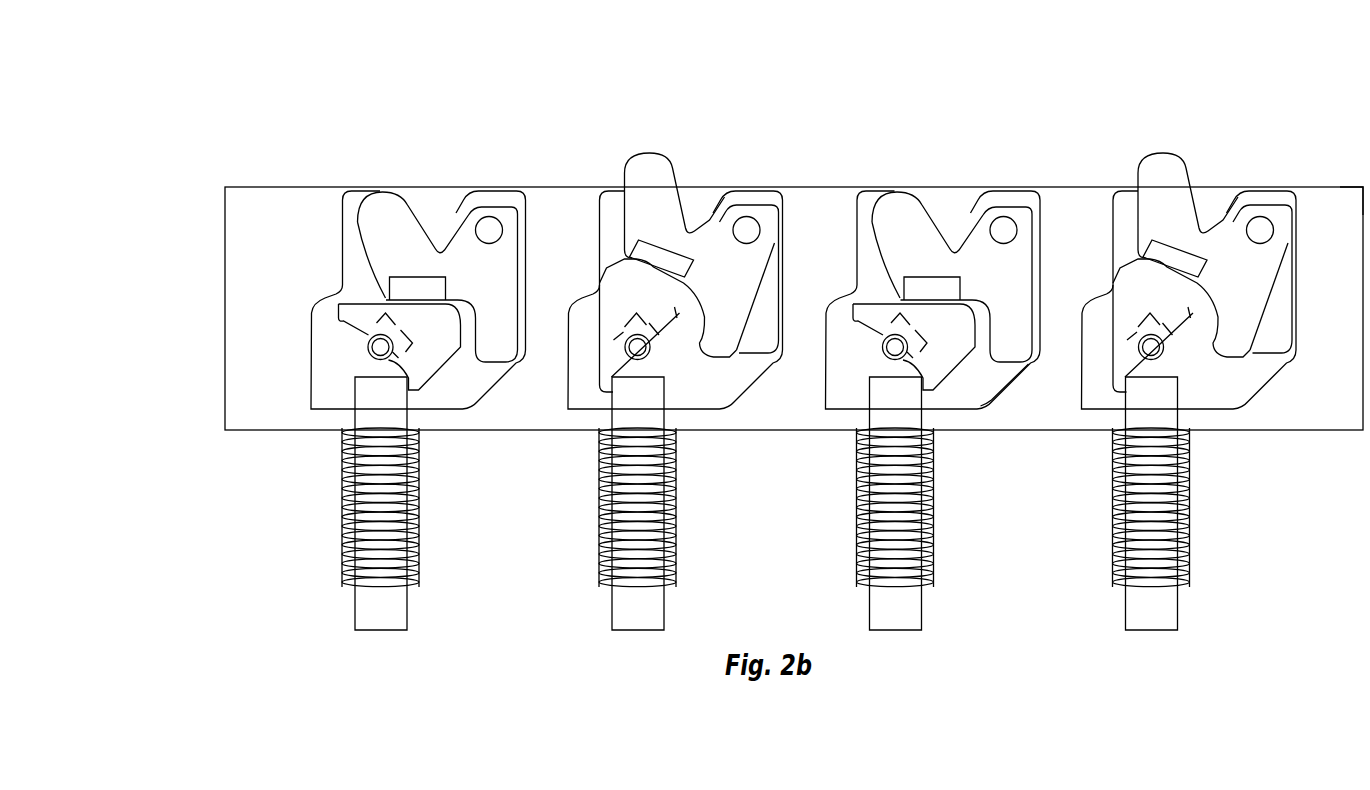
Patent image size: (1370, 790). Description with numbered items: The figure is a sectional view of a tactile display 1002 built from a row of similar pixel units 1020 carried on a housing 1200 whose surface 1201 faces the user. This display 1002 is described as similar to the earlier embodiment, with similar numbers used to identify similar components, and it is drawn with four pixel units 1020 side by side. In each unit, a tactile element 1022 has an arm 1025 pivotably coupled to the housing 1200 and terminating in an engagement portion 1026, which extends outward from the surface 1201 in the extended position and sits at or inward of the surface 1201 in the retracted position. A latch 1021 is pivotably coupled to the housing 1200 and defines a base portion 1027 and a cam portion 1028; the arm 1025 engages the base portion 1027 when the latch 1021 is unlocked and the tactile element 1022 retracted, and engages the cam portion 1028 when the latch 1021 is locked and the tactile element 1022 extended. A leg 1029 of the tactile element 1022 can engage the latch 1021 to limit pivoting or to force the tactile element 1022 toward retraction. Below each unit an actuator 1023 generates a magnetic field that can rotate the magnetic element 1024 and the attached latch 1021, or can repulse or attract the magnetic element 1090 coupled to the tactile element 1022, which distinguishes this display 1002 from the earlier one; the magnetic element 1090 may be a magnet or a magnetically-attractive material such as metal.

The tactile display 1002 is at (358, 133).
The pixel unit 1020 is at (933, 233).
The latch 1021 is at (355, 328).
The tactile element 1022 is at (952, 238).
The actuator 1023 is at (340, 494).
The magnetic element 1024 is at (372, 313).
The arm 1025 is at (1242, 379).
The engagement portion 1026 is at (699, 169).
The base portion 1027 is at (423, 334).
The cam portion 1028 is at (601, 392).
The leg 1029 is at (1038, 454).
The magnetic element 1090 is at (424, 272).
The housing 1200 is at (1074, 214).
The surface 1201 is at (1341, 186).